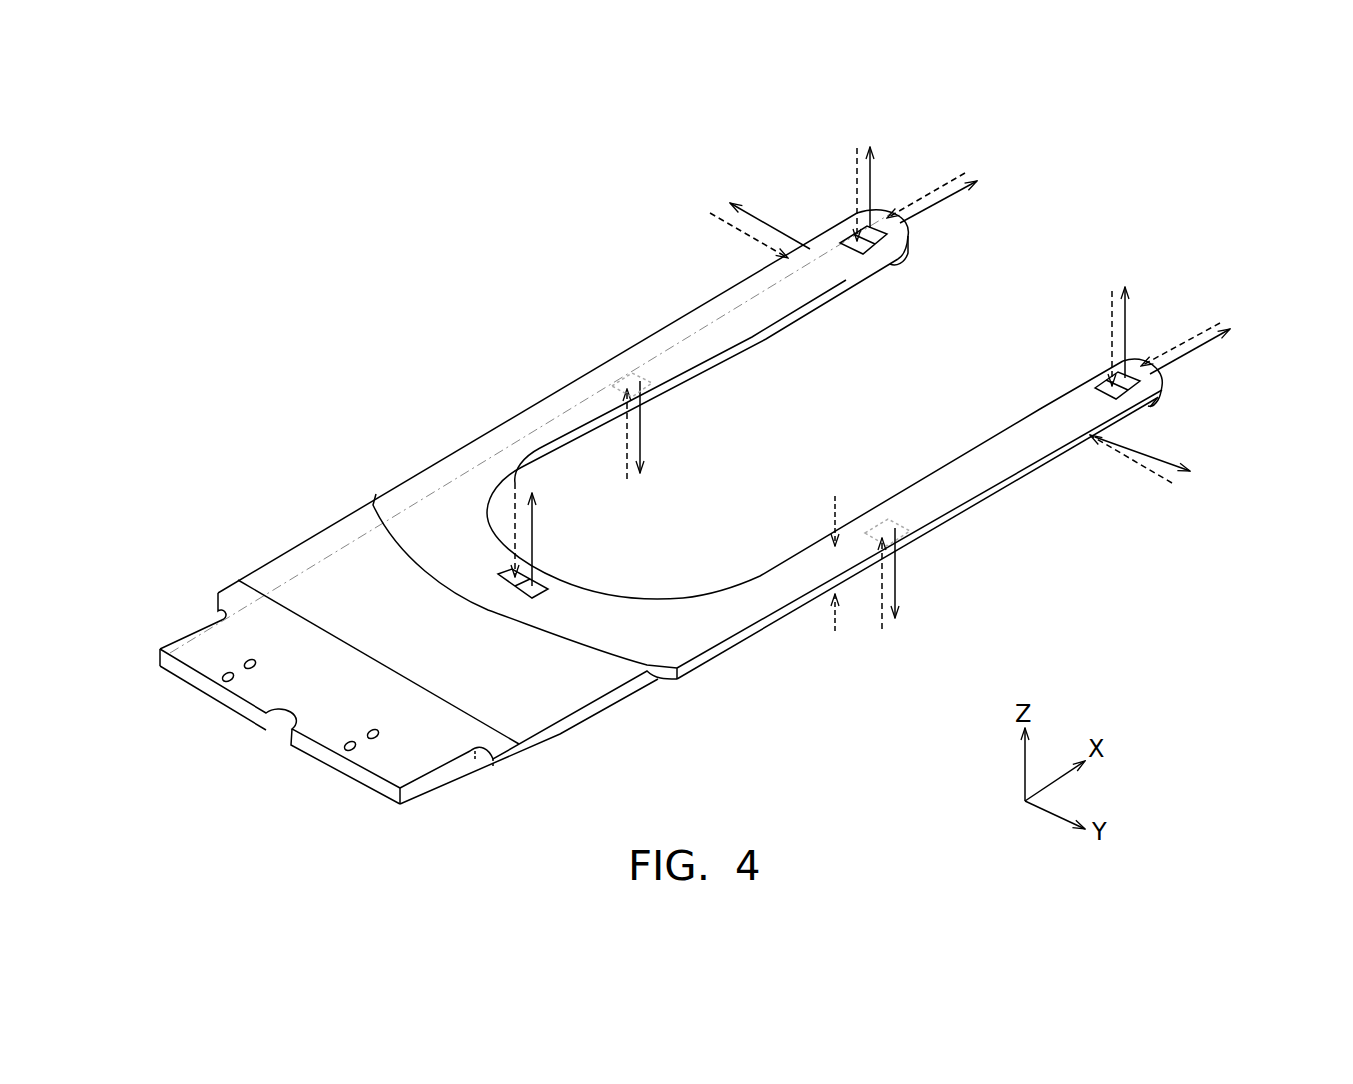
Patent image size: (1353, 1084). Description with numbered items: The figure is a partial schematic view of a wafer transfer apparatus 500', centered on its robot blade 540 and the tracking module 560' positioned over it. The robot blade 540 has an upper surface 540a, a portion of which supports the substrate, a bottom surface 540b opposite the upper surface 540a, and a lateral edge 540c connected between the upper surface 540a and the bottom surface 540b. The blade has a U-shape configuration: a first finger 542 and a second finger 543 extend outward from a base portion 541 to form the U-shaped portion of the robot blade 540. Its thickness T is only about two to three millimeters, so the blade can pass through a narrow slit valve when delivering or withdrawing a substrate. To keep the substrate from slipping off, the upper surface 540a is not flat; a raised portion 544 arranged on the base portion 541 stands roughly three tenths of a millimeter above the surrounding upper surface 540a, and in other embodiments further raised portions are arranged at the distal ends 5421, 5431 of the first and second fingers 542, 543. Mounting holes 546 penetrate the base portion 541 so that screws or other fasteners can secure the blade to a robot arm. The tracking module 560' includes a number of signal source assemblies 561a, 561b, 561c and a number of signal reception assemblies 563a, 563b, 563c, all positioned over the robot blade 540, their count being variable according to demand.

The wafer transfer apparatus 500' is at (697, 455).
The robot blade 540 is at (388, 331).
The upper surface 540a is at (402, 495).
The bottom surface 540b is at (687, 660).
The lateral edge 540c is at (919, 521).
The base portion 541 is at (550, 685).
The first finger 542 is at (744, 605).
The second finger 543 is at (684, 308).
The raised portion 544 is at (550, 643).
The mounting holes 546 is at (218, 670).
The distal end of the first finger 5421 is at (1150, 376).
The distal end of the second finger 5431 is at (904, 223).
The tracking module 560' is at (1098, 371).
The signal source assembly 561a is at (1149, 390).
The signal source assembly 561b is at (1142, 364).
The signal source assembly 561c is at (1097, 413).
The signal reception assembly 563a is at (1092, 376).
The signal reception assembly 563b is at (1134, 369).
The signal reception assembly 563c is at (1080, 425).
The thickness T is at (834, 549).